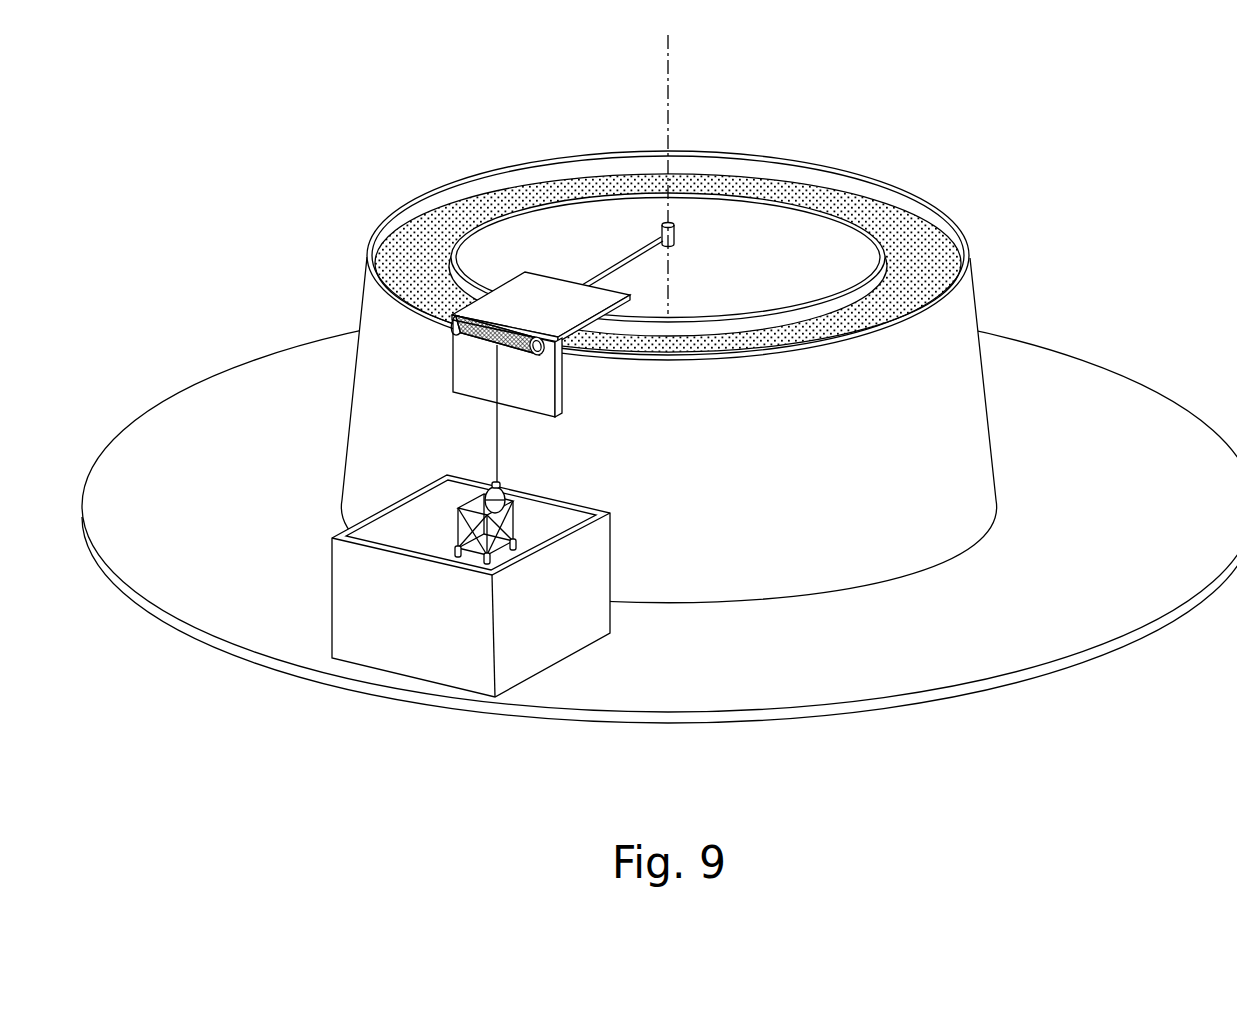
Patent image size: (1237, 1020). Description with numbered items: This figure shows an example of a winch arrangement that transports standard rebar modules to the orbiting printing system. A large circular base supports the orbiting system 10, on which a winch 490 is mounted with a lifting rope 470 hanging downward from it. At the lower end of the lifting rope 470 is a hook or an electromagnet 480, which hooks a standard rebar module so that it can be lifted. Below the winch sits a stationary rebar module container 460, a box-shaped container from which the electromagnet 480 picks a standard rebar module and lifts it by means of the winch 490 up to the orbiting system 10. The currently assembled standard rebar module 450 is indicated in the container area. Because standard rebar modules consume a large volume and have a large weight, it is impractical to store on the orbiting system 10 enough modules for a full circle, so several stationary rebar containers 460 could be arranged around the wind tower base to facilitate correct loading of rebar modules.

The orbiting system 10 is at (543, 303).
The currently assembled standard rebar module 450 is at (515, 528).
The stationary rebar module container 460 is at (347, 598).
The lifting rope 470 is at (497, 432).
The electromagnet 480 is at (470, 488).
The winch 490 is at (455, 330).